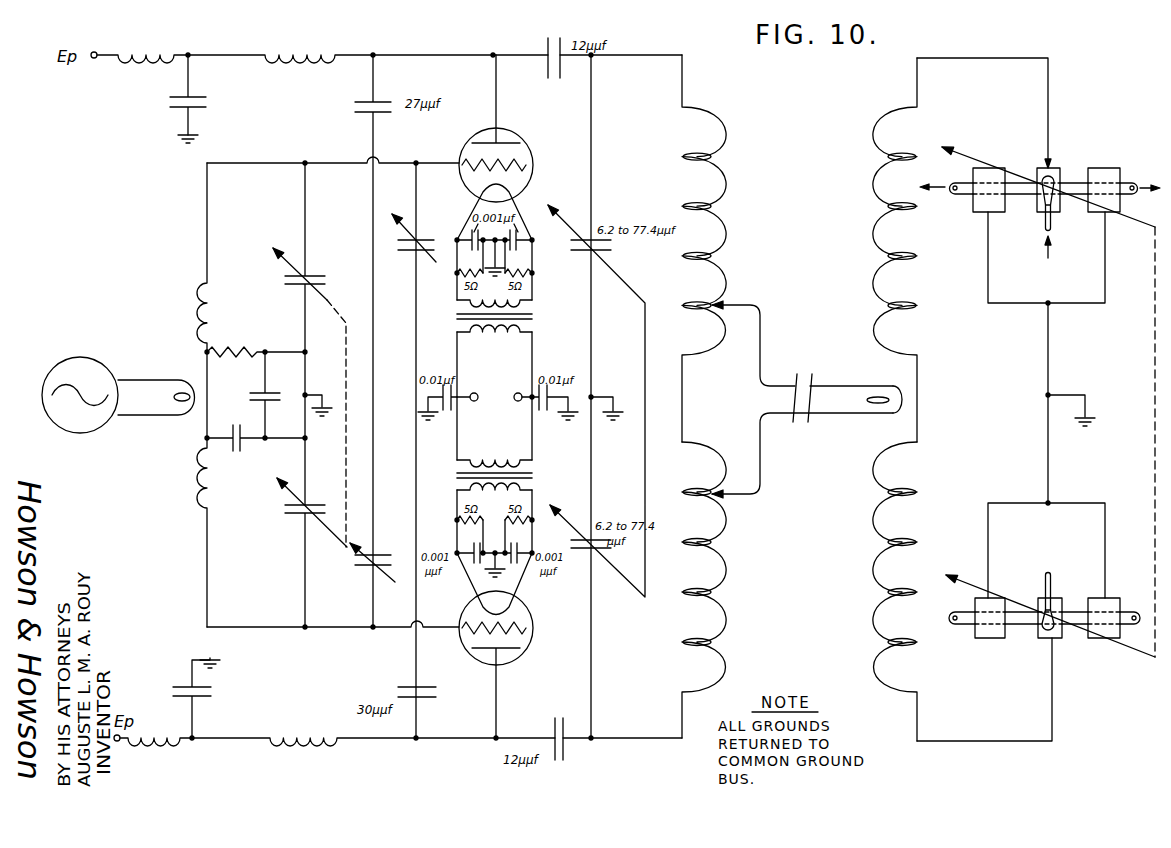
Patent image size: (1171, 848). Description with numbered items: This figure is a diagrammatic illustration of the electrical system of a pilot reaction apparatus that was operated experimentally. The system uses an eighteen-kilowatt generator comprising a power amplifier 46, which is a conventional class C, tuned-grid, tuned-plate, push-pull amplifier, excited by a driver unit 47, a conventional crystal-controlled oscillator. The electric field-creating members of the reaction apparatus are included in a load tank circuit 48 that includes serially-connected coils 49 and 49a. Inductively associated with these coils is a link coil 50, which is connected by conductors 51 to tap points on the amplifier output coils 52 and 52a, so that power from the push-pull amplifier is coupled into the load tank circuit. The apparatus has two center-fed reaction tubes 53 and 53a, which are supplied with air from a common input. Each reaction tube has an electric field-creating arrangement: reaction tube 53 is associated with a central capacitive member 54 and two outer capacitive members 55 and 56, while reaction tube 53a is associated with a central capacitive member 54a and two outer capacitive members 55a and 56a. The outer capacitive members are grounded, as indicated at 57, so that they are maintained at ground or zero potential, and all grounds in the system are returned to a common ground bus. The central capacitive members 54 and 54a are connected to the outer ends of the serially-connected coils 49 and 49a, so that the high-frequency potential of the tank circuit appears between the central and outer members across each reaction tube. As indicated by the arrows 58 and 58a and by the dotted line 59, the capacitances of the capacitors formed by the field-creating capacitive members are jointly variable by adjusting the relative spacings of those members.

The power amplifier 46 is at (402, 366).
The driver unit 47 is at (78, 434).
The load tank circuit 48 is at (996, 396).
The coil 49 is at (918, 260).
The coil 49a is at (918, 536).
The link coil 50 is at (893, 384).
The conductors 51 is at (795, 425).
The amplifier output coil 52 is at (726, 228).
The amplifier output coil 52a is at (726, 572).
The reaction tube 53 is at (1022, 198).
The reaction tube 53a is at (1027, 622).
The central capacitive member 54 is at (1060, 200).
The central capacitive member 54a is at (1058, 600).
The outer capacitive member 55 is at (975, 200).
The outer capacitive member 55a is at (989, 640).
The outer capacitive member 56 is at (1100, 168).
The outer capacitive member 56a is at (1115, 598).
The ground 57 is at (1088, 416).
The arrow 58 is at (1130, 222).
The arrow 58a is at (1140, 653).
The dotted line 59 is at (1153, 472).